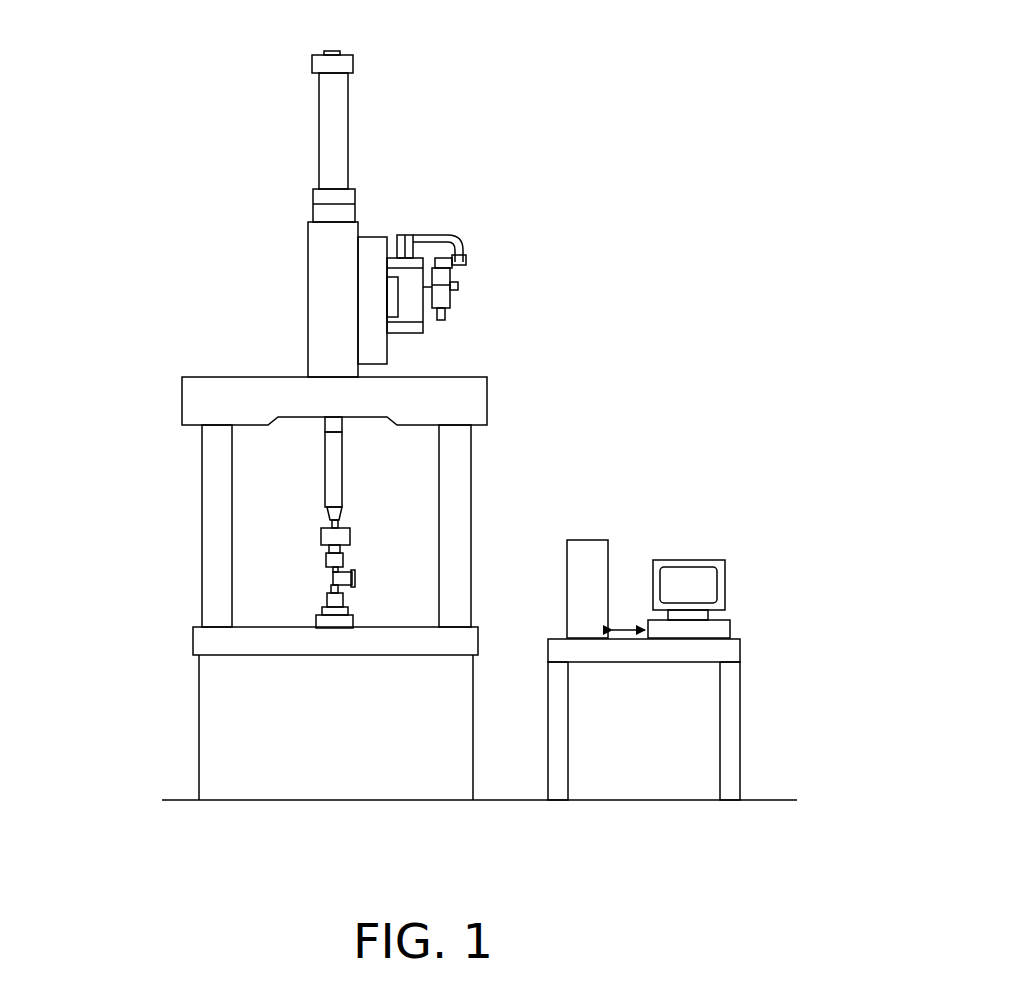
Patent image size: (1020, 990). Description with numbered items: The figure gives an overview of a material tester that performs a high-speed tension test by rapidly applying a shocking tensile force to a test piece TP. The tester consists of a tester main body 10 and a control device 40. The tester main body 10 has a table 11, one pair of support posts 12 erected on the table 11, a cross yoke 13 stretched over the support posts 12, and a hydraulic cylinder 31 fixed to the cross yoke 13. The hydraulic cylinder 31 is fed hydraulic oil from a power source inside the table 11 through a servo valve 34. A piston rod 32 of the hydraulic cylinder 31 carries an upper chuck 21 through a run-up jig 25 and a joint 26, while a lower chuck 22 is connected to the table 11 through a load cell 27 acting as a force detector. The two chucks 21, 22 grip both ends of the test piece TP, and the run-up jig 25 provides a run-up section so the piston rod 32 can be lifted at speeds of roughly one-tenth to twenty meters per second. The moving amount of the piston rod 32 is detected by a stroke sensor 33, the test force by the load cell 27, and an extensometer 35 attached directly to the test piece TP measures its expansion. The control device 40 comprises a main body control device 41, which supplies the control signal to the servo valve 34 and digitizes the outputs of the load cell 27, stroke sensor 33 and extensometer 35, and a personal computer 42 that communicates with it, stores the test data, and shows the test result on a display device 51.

The tester main body 10 is at (243, 168).
The table 11 is at (208, 642).
The support posts 12 is at (212, 467).
The cross yoke 13 is at (193, 402).
The upper chuck 21 is at (342, 558).
The lower chuck 22 is at (337, 600).
The run-up jig 25 is at (323, 475).
The joint 26 is at (321, 532).
The load cell 27 is at (317, 617).
The hydraulic cylinder 31 is at (317, 272).
The piston rod 32 is at (323, 425).
The stroke sensor 33 is at (347, 64).
The servo valve 34 is at (367, 243).
The extensometer 35 is at (353, 580).
The test piece TP is at (337, 575).
The control device 40 is at (648, 450).
The main body control device 41 is at (587, 540).
The personal computer 42 is at (718, 627).
The display device 51 is at (683, 578).